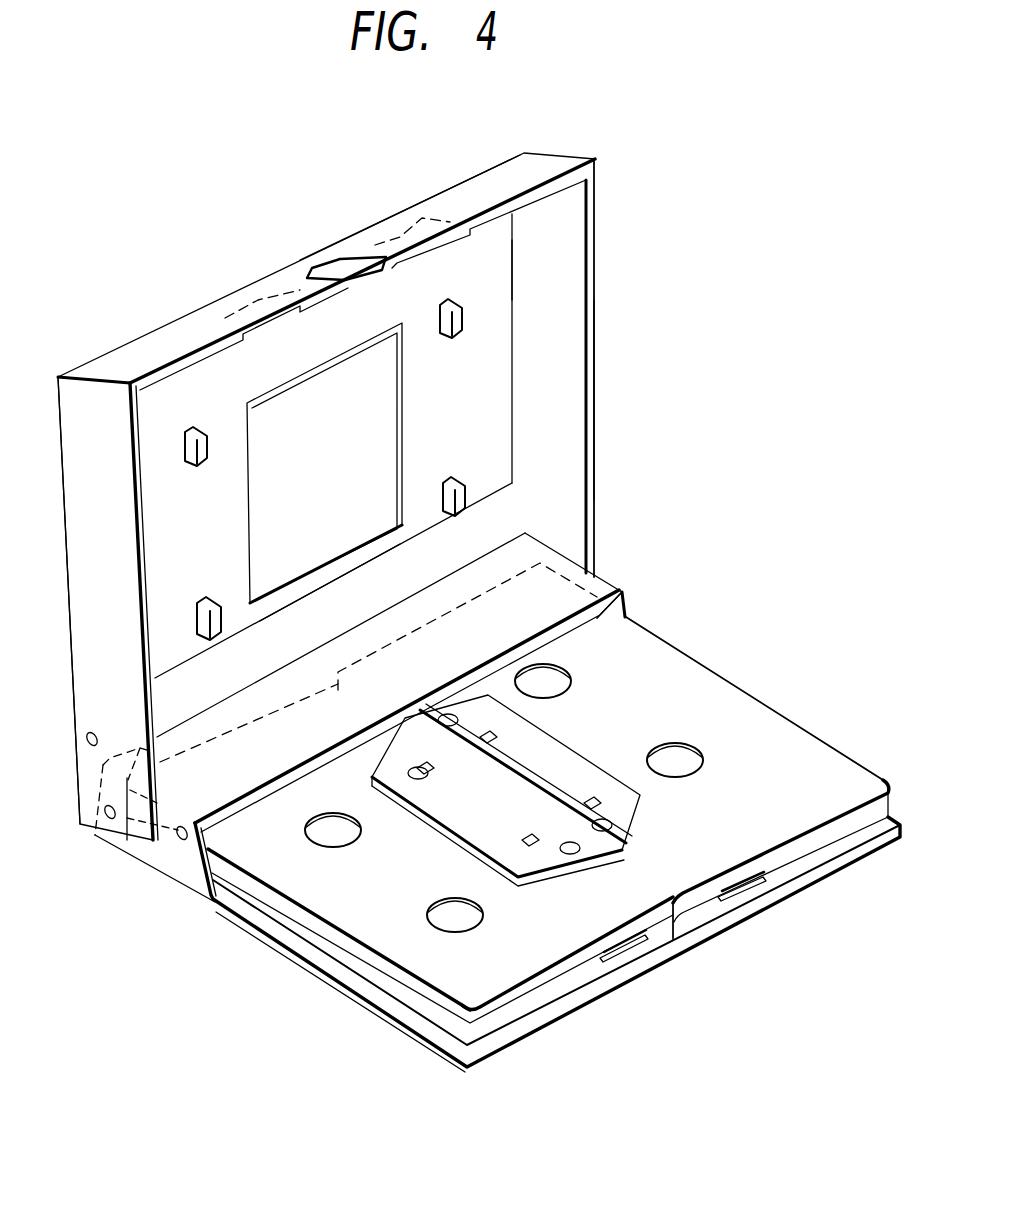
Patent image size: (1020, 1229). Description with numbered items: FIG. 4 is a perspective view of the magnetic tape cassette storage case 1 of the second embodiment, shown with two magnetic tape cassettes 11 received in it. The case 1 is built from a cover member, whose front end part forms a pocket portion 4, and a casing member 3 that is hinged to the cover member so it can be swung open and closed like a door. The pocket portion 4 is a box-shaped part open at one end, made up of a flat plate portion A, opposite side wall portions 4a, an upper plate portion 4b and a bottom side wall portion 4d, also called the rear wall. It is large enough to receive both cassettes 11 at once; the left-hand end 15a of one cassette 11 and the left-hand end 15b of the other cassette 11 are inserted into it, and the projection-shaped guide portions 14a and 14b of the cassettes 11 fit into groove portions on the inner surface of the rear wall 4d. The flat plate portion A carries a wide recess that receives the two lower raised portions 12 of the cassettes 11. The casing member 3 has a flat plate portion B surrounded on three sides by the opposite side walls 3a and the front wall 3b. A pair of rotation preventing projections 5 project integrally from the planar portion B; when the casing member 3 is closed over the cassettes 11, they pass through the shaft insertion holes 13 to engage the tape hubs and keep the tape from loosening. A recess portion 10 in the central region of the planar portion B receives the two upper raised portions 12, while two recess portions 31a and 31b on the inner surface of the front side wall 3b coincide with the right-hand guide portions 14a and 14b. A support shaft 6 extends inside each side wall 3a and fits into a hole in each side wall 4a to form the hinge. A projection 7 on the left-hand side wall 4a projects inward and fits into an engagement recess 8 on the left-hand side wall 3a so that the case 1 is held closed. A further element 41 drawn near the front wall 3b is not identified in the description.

The magnetic tape cassette storage case 1 is at (648, 320).
The casing member 3 is at (145, 305).
The side wall of casing member 3a is at (567, 397).
The front wall of casing member 3b is at (453, 191).
The pocket portion 4 is at (627, 614).
The side wall portion of pocket portion 4a is at (140, 855).
The upper plate portion 4b is at (563, 602).
The bottom side wall portion (rear wall) 4d is at (323, 648).
The rotation preventing projection 5 is at (450, 337).
The support shaft 6 is at (109, 819).
The projection 7 is at (182, 841).
The engagement recess 8 is at (84, 741).
The recess portion 10 is at (268, 412).
The magnetic tape cassette 11 is at (683, 674).
The raised portion 12 is at (578, 762).
The shaft insertion hole 13 is at (567, 683).
The projection-shaped guide portion 14a is at (623, 953).
The projection-shaped guide portion 14b is at (760, 890).
The left-hand end of cassette 15a is at (430, 606).
The left-hand end of cassette 15b is at (842, 897).
The recess portion 31a is at (248, 305).
The recess portion 31b is at (405, 232).
The latch 41 is at (345, 264).
The flat plate portion of cover member A is at (690, 933).
The flat plate portion of casing member B is at (505, 274).